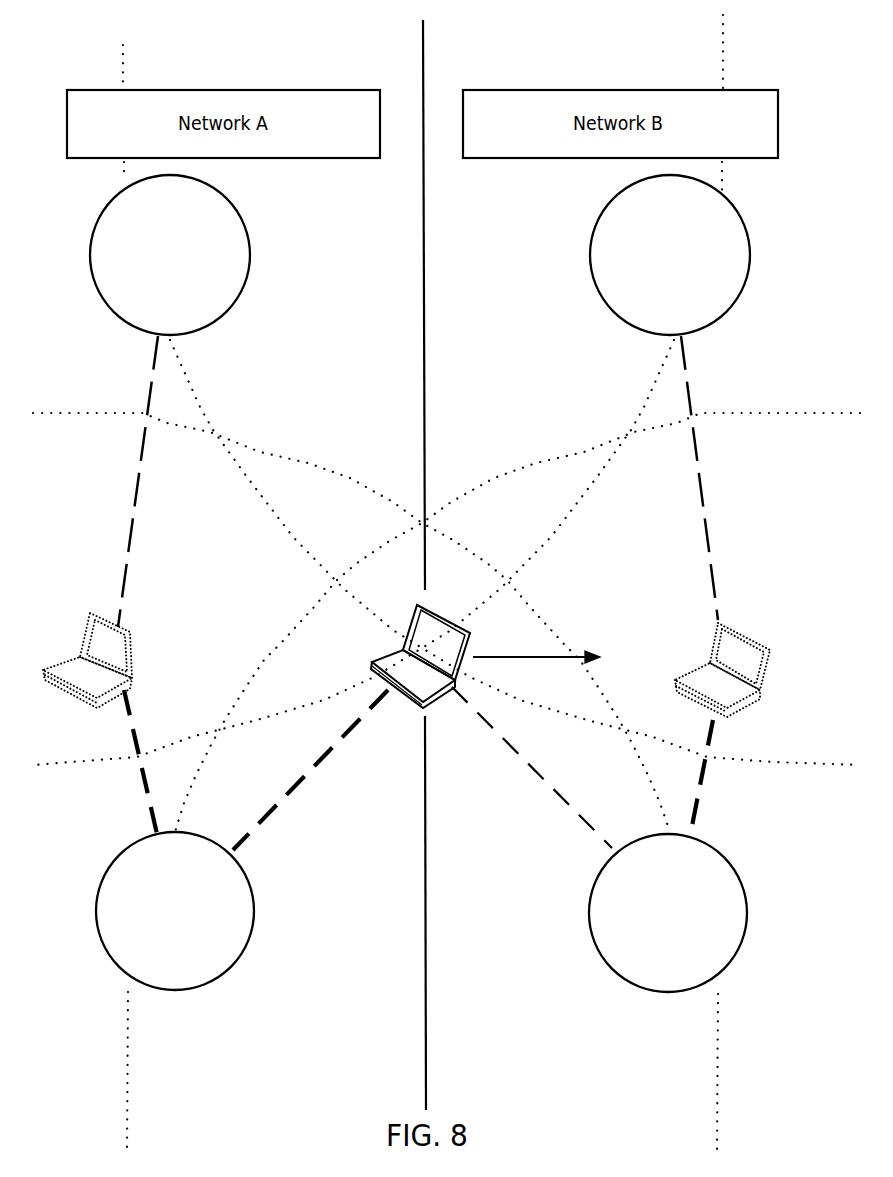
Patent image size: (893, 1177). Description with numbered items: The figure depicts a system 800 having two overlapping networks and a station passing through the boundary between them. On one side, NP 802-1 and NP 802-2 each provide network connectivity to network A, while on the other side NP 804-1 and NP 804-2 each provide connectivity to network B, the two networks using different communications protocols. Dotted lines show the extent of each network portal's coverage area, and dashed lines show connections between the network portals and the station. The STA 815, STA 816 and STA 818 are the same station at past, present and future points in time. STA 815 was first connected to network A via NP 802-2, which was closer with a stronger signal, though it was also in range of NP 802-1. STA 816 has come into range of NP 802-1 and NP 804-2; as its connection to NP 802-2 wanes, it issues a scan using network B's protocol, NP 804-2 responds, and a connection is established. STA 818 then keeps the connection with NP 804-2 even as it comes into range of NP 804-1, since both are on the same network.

The system 800 is at (148, 24).
The NP 802-1 is at (197, 278).
The NP 802-2 is at (202, 935).
The NP 804-1 is at (697, 278).
The NP 804-2 is at (695, 936).
The STA 815 is at (56, 666).
The STA 816 is at (404, 651).
The STA 818 is at (703, 667).